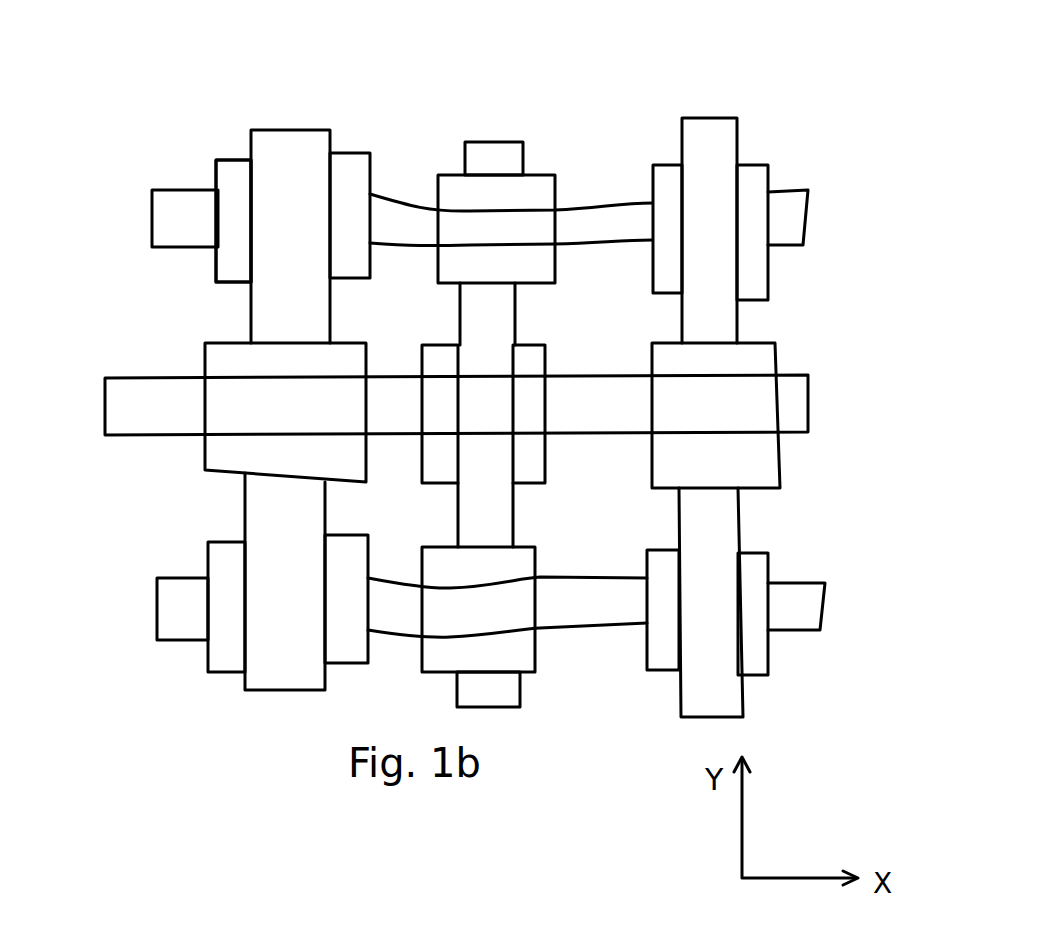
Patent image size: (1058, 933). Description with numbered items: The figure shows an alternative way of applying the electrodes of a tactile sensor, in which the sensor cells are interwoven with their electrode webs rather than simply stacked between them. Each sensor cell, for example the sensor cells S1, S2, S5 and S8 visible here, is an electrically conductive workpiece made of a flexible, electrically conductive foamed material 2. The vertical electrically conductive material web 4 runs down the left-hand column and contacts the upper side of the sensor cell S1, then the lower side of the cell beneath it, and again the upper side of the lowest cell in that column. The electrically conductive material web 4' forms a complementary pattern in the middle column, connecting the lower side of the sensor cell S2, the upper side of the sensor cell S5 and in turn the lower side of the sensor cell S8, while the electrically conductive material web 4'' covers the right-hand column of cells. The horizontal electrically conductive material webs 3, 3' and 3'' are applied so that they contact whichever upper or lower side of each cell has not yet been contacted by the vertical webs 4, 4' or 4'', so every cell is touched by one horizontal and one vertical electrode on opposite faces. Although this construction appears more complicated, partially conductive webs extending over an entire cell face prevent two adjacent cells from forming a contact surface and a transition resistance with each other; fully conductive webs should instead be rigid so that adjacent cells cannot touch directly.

The electrically conductive foamed material 2 is at (216, 272).
The electrically conductive material web 3 is at (431, 218).
The electrically conductive material web 3' is at (420, 424).
The electrically conductive material web 3'' is at (445, 621).
The electrically conductive material web 4 is at (289, 377).
The electrically conductive material web 4' is at (501, 373).
The electrically conductive material web 4'' is at (725, 373).
The sensor cell S1 is at (228, 158).
The sensor cell S2 is at (548, 162).
The sensor cell S5 is at (545, 347).
The sensor cell S8 is at (535, 547).